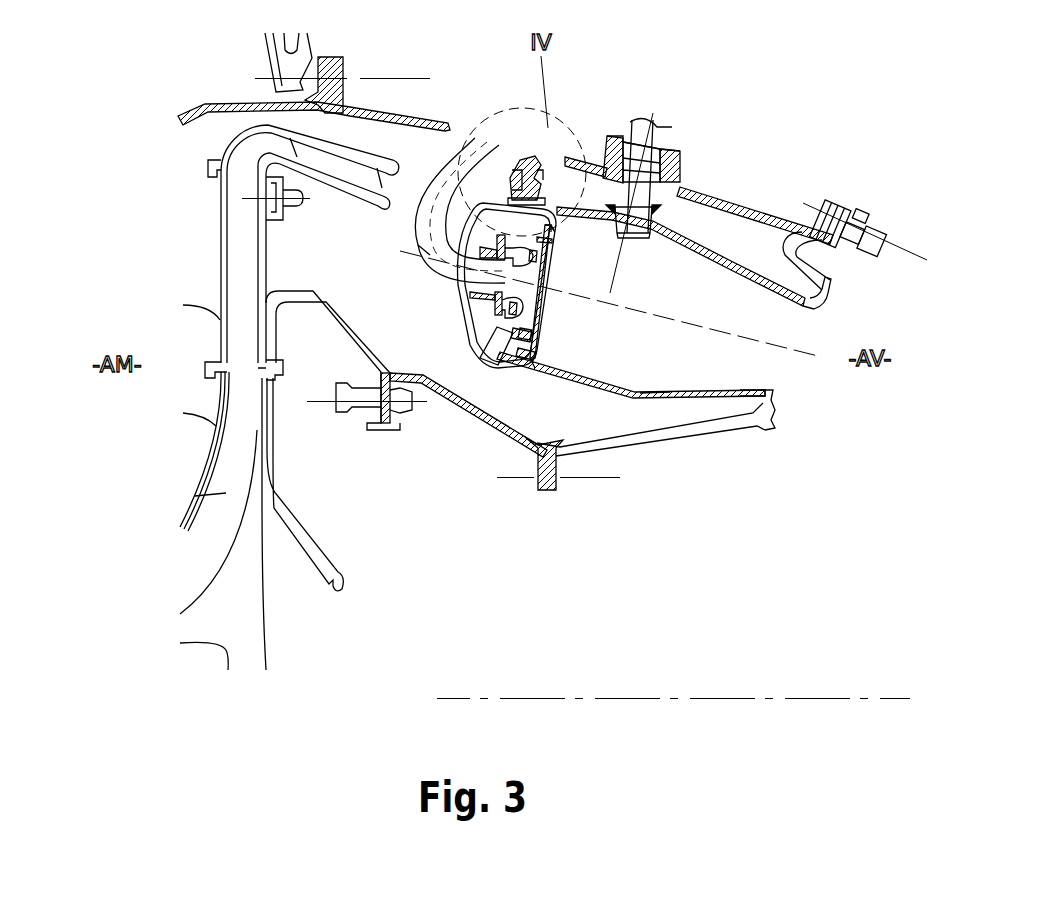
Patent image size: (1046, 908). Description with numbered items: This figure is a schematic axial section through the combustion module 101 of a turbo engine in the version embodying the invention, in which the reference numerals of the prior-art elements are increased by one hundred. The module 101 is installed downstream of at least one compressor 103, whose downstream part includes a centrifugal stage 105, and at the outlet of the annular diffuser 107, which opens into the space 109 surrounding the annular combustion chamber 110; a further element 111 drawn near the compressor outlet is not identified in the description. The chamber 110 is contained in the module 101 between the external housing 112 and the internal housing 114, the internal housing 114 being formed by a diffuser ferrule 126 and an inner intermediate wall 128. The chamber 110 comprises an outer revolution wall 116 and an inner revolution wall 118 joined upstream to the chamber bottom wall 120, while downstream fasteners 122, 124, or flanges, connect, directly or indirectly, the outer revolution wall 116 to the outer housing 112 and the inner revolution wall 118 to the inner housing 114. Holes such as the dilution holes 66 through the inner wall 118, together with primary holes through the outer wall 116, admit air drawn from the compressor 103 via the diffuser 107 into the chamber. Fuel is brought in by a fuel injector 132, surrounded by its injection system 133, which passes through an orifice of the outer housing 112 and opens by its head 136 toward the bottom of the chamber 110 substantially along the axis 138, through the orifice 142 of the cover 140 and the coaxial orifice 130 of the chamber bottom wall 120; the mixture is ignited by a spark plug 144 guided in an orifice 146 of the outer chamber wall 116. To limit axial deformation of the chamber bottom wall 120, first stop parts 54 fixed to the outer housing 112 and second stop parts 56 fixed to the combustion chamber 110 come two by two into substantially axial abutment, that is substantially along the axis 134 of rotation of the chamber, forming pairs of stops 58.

The combustion module 101 is at (788, 178).
The compressor 103 is at (197, 558).
The centrifugal stage 105 is at (198, 470).
The annular diffuser 107 is at (220, 237).
The space 109 is at (417, 190).
The combustion chamber 110 is at (626, 399).
The vane platform 111 is at (195, 496).
The external housing 112 is at (720, 190).
The internal housing 114 is at (455, 406).
The outer revolution wall 116 is at (768, 281).
The inner revolution wall 118 is at (738, 390).
The chamber bottom wall 120 is at (532, 355).
The downstream fastener 122 is at (828, 257).
The downstream fastener 124 is at (748, 427).
The diffuser ferrule 126 is at (323, 308).
The inner intermediate wall 128 is at (482, 424).
The orifice of the chamber bottom wall 130 is at (550, 268).
The fuel injector 132 is at (424, 231).
The injection system 133 is at (430, 278).
The axis 134 is at (722, 698).
The injector head 136 is at (538, 322).
The injector axis 138 is at (703, 322).
The cover 140 is at (480, 344).
The orifice of the cover 142 is at (470, 294).
The spark plug 144 is at (652, 197).
The orifice of the outer chamber wall 146 is at (643, 233).
The first stop parts 54 is at (530, 157).
The second stop parts 56 is at (518, 148).
The pairs of stops 58 is at (549, 165).
The dilution holes 66 is at (662, 393).